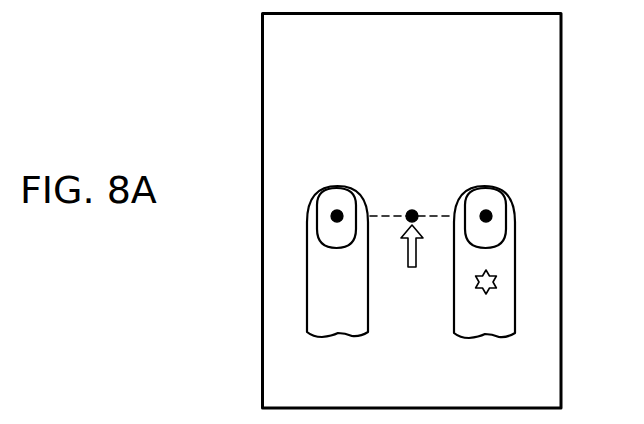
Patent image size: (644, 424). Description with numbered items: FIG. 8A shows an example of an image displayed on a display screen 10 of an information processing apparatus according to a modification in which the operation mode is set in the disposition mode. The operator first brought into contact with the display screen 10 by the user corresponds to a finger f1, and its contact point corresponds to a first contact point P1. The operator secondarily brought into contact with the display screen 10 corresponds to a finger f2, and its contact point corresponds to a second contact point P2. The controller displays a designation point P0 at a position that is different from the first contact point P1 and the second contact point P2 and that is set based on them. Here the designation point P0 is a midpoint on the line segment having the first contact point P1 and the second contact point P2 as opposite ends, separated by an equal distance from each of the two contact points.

The display screen 10 is at (562, 204).
The finger f1 is at (307, 277).
The finger f2 is at (457, 316).
The first contact point P1 is at (337, 210).
The second contact point P2 is at (486, 210).
The designation point P0 is at (412, 211).